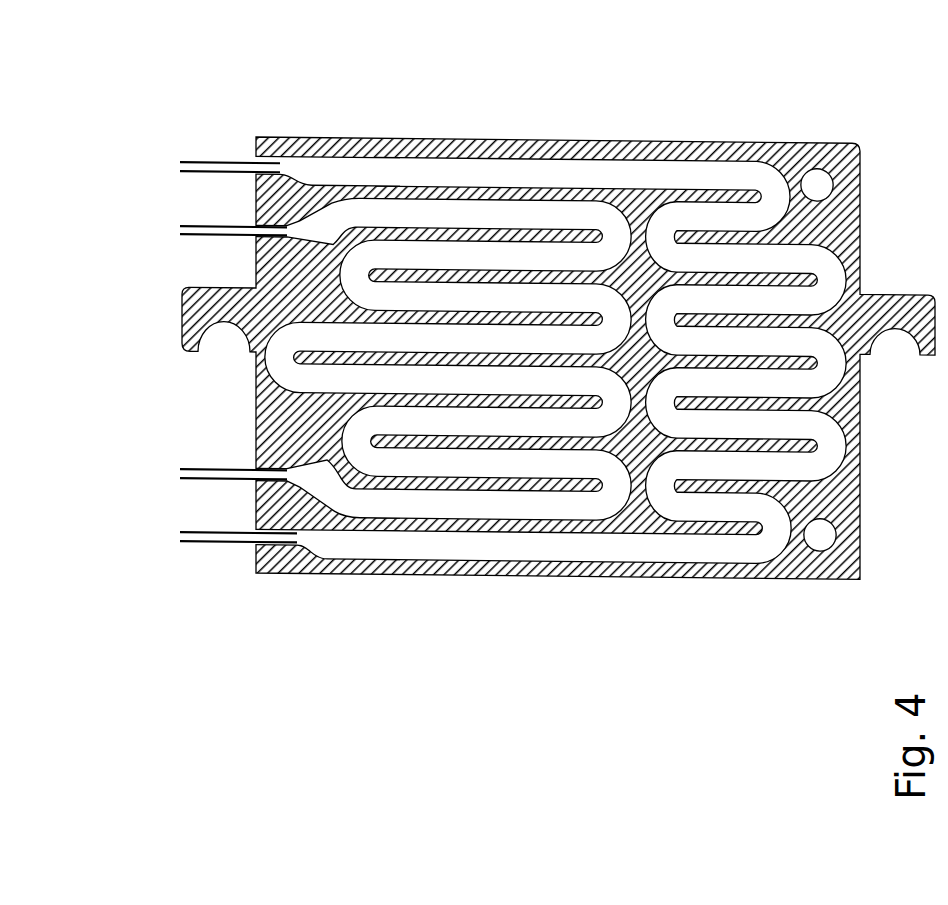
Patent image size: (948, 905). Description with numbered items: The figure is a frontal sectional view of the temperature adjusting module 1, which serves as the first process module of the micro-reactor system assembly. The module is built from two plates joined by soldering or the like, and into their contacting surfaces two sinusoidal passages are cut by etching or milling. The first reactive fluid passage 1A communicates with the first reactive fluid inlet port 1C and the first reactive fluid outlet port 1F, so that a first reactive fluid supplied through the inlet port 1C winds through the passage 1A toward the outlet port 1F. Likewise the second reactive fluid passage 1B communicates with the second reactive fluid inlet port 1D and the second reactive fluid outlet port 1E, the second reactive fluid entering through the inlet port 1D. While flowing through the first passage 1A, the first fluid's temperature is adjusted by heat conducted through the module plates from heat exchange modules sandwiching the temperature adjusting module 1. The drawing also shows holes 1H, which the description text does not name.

The temperature adjusting module 1 is at (630, 150).
The first reactive fluid passage 1A is at (365, 163).
The second reactive fluid passage 1B is at (504, 212).
The first reactive fluid inlet port 1C is at (205, 168).
The second reactive fluid inlet port 1D is at (205, 233).
The second reactive fluid outlet port 1E is at (205, 478).
The first reactive fluid outlet port 1F is at (205, 542).
The mounting holes 1H is at (814, 182).